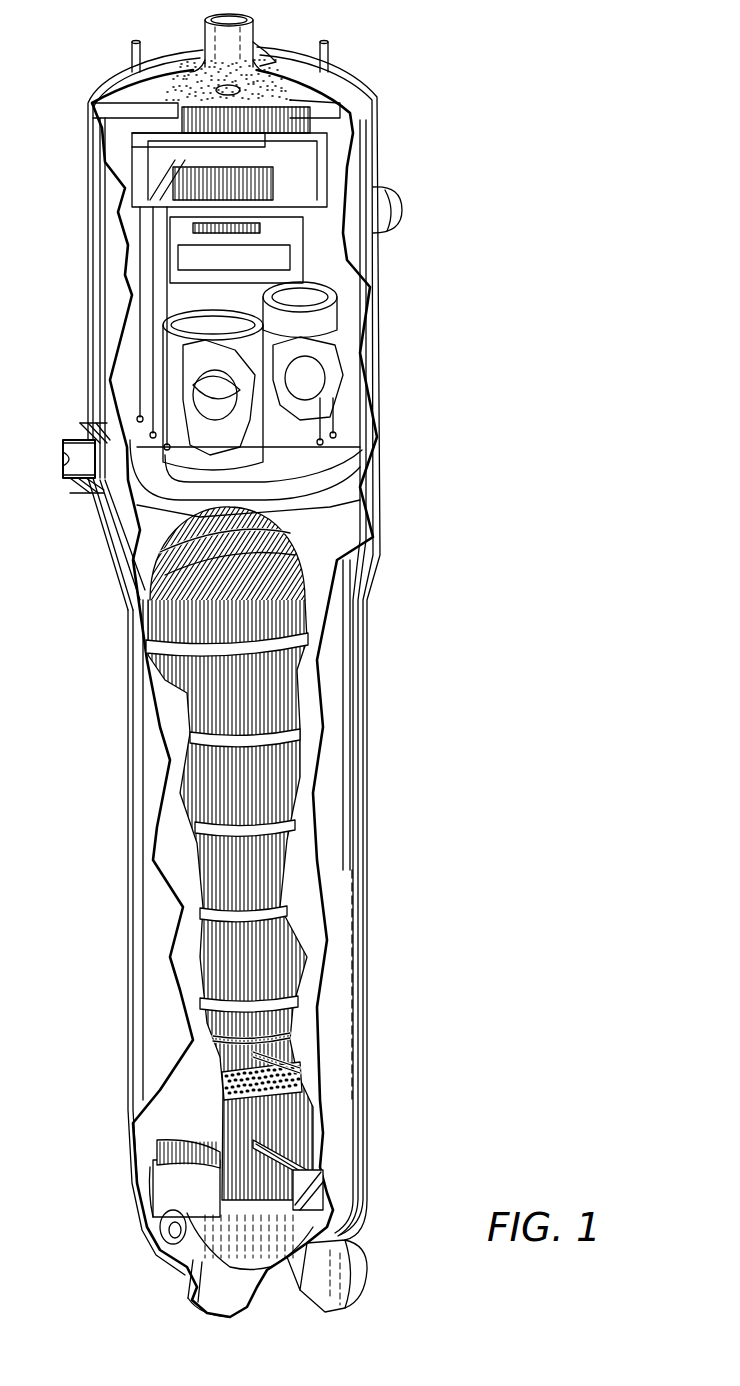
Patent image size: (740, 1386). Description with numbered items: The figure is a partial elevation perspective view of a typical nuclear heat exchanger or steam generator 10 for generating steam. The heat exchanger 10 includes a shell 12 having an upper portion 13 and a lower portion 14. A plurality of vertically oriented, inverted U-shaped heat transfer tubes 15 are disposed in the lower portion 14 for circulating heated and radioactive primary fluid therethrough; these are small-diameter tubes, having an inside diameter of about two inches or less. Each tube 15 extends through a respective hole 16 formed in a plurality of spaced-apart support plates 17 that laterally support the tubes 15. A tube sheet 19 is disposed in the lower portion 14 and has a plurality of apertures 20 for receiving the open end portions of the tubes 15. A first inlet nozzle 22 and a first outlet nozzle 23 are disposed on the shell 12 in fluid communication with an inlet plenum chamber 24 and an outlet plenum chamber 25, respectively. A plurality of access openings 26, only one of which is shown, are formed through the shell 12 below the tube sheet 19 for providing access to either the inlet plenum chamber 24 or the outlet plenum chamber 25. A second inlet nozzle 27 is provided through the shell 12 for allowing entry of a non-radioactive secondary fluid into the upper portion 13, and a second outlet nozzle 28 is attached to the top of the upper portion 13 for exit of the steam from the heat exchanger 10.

The nuclear heat exchanger 10 is at (505, 163).
The shell 12 is at (380, 353).
The upper portion 13 is at (383, 488).
The lower portion 14 is at (345, 765).
The heat transfer tubes 15 is at (232, 867).
The hole 16 is at (277, 1060).
The support plates 17 is at (300, 1000).
The tube sheet 19 is at (337, 1157).
The apertures 20 is at (307, 1180).
The first inlet nozzle 22 is at (203, 1307).
The first outlet nozzle 23 is at (367, 1273).
The inlet plenum chamber 24 is at (187, 1257).
The outlet plenum chamber 25 is at (327, 1230).
The access openings 26 is at (177, 1207).
The second inlet nozzle 27 is at (83, 435).
The second outlet nozzle 28 is at (257, 30).